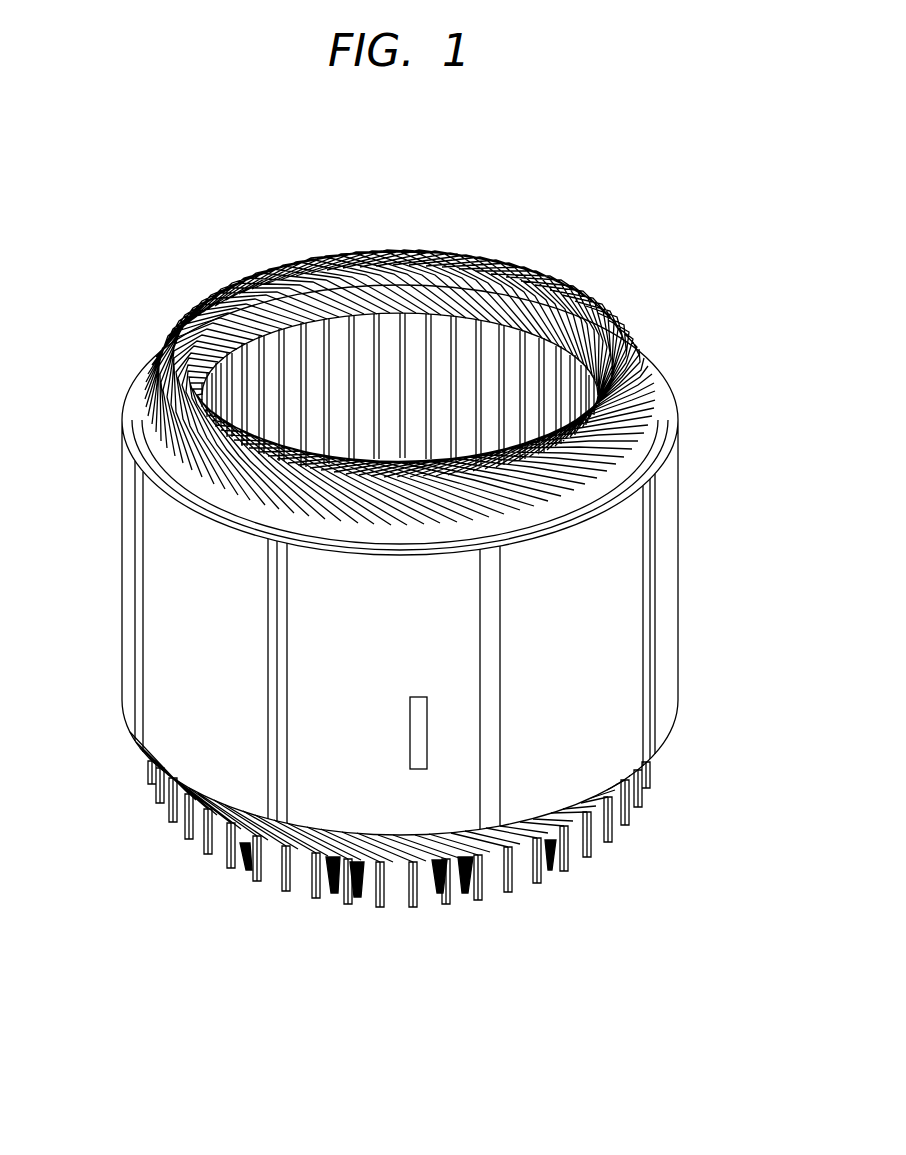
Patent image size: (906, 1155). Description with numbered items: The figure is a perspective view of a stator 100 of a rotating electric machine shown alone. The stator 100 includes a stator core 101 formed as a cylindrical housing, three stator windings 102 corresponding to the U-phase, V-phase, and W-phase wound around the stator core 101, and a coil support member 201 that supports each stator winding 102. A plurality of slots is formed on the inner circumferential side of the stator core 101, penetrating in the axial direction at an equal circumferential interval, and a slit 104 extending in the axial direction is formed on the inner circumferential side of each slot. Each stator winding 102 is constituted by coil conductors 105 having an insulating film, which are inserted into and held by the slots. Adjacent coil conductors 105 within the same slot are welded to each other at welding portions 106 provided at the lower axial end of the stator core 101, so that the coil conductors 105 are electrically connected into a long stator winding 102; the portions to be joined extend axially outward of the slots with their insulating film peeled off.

The stator 100 is at (138, 202).
The stator core 101 is at (666, 582).
The stator winding 102 is at (613, 322).
The slit 104 is at (415, 314).
The coil conductor 105 is at (340, 860).
The welding portion 106 is at (450, 885).
The coil support member 201 is at (657, 420).